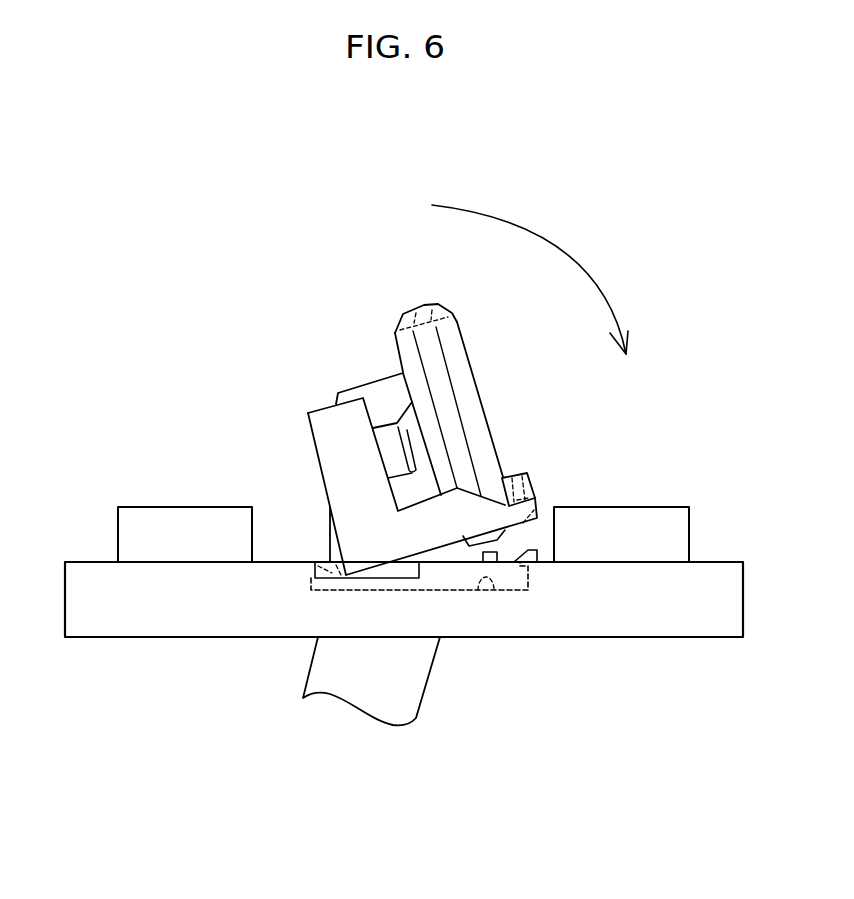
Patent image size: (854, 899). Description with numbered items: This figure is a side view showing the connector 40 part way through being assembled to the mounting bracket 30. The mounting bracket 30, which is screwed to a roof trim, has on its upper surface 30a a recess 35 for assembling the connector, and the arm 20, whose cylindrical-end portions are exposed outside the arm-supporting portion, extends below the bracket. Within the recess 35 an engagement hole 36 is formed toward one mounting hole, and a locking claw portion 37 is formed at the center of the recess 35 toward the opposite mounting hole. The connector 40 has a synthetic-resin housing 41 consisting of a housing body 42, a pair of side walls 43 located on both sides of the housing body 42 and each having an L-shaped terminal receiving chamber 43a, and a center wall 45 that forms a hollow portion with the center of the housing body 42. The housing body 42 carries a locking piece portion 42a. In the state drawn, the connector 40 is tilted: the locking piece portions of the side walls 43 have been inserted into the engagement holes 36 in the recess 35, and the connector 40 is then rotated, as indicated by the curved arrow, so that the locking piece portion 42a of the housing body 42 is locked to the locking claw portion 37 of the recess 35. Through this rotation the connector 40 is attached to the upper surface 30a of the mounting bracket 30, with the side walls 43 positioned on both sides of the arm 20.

The arm 20 is at (430, 690).
The mounting bracket 30 is at (716, 560).
The upper surface of the mounting bracket 30a is at (85, 562).
The recess for assembling the connector 35 is at (492, 591).
The engagement hole 36 is at (312, 592).
The locking claw portion 37 is at (537, 556).
The connector 40 is at (373, 304).
The housing 41 is at (446, 303).
The housing body 42 is at (465, 372).
The locking piece portion of the housing body 42a is at (526, 470).
The side wall 43 is at (325, 440).
The L-shaped terminal receiving chamber 43a is at (330, 548).
The center wall 45 is at (364, 388).